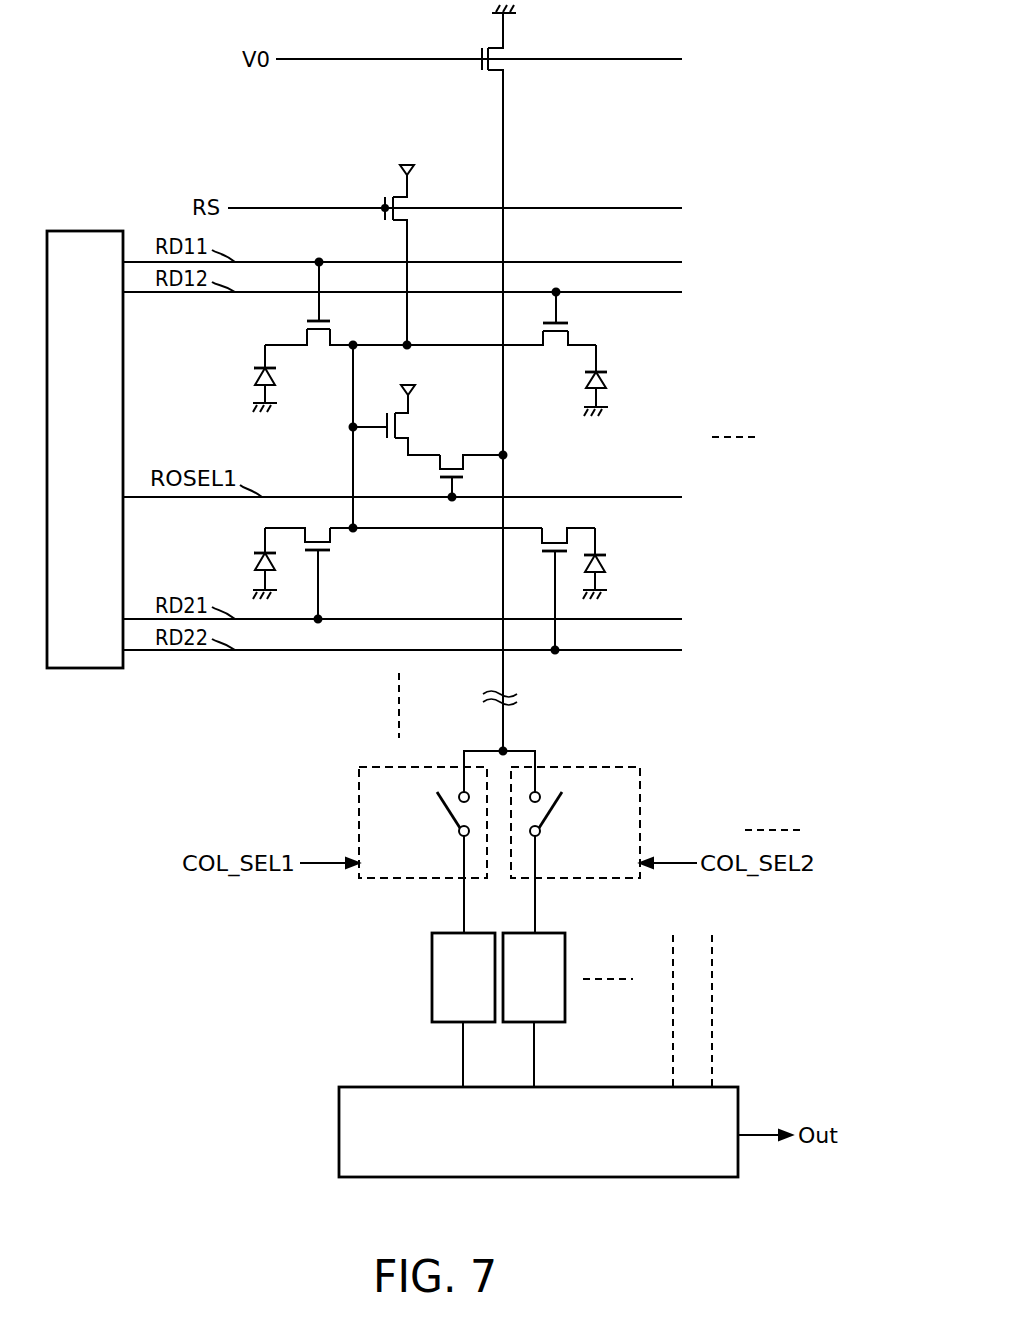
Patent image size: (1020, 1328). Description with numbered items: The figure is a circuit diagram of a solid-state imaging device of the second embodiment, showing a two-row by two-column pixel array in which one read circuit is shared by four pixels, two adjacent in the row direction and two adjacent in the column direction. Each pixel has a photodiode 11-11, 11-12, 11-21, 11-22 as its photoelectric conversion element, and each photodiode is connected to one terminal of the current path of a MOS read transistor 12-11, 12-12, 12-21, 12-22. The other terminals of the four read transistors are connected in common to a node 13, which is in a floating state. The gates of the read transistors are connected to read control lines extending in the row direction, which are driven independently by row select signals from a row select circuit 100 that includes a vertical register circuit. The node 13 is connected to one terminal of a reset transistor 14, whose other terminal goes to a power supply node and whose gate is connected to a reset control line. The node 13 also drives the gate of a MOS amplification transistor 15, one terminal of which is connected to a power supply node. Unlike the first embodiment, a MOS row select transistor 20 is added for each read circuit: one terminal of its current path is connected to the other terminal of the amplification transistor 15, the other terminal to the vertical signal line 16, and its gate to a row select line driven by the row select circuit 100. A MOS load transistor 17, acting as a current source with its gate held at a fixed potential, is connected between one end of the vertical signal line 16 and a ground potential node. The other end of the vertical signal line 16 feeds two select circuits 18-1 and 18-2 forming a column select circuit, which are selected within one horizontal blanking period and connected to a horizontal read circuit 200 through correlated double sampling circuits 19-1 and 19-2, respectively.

The row select circuit 100 is at (85, 231).
The MOS load transistor 17 is at (505, 52).
The vertical signal line 16 is at (504, 149).
The reset transistor 14 is at (408, 197).
The MOS read transistor 12-11 is at (320, 336).
The photodiode 11-11 is at (252, 373).
The MOS read transistor 12-12 is at (556, 338).
The photodiode 11-12 is at (607, 378).
The node 13 is at (350, 428).
The MOS amplification transistor 15 is at (409, 418).
The MOS row select transistor 20 is at (453, 452).
The MOS read transistor 12-21 is at (332, 556).
The photodiode 11-21 is at (252, 560).
The MOS read transistor 12-22 is at (555, 528).
The photodiode 11-22 is at (606, 563).
The select circuit 18-1 is at (357, 803).
The select circuit 18-2 is at (642, 803).
The correlated double sampling (CDS) circuit 19-1 is at (432, 1010).
The correlated double sampling (CDS) circuit 19-2 is at (566, 1010).
The horizontal read circuit 200 is at (339, 1110).